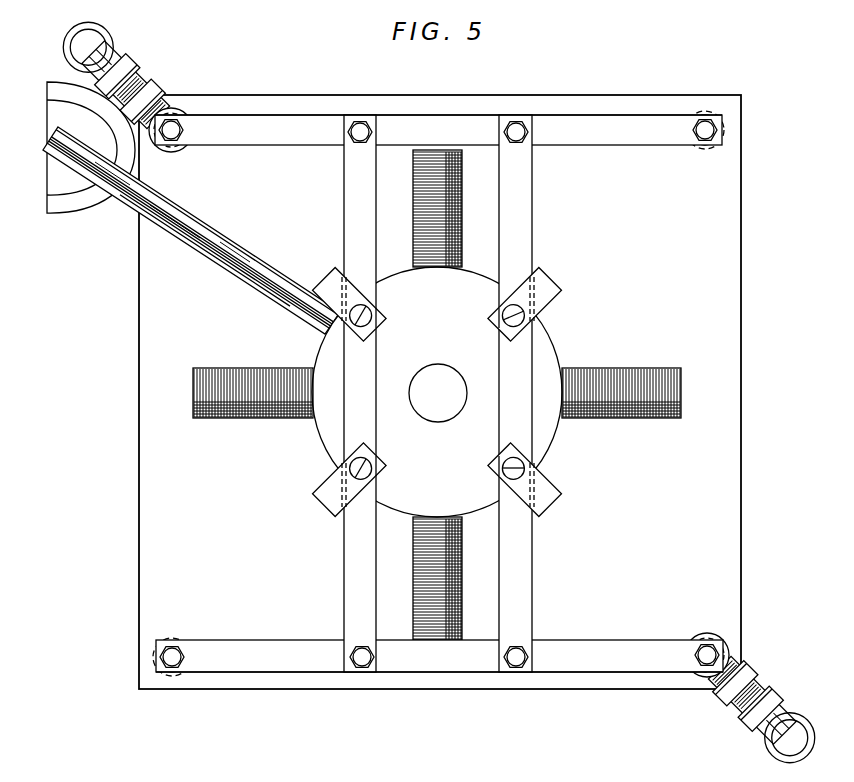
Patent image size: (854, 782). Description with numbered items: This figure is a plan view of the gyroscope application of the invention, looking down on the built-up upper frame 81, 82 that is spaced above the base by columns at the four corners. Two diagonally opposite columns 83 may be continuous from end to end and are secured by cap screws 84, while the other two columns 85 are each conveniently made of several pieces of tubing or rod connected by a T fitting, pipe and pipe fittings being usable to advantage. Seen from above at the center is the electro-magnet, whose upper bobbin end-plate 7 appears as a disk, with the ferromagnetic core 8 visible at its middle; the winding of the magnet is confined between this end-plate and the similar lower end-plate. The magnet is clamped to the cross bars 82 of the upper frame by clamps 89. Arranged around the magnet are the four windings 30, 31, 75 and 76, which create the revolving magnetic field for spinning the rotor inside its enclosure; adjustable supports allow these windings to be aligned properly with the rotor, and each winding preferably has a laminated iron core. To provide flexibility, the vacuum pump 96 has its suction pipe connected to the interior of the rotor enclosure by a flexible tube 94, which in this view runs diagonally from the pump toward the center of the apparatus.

The bobbin end-plate 7 is at (538, 366).
The ferromagnetic core 8 is at (441, 385).
The winding 30 is at (258, 383).
The winding 31 is at (585, 387).
The winding 75 is at (456, 212).
The winding 76 is at (460, 574).
The upper frame bar 81 is at (578, 132).
The cross bar 82 is at (360, 603).
The column 83 is at (705, 150).
The cap screw 84 is at (183, 131).
The column 85 is at (186, 156).
The clamp 89 is at (333, 283).
The flexible tube 94 is at (197, 236).
The vacuum pump 96 is at (64, 205).